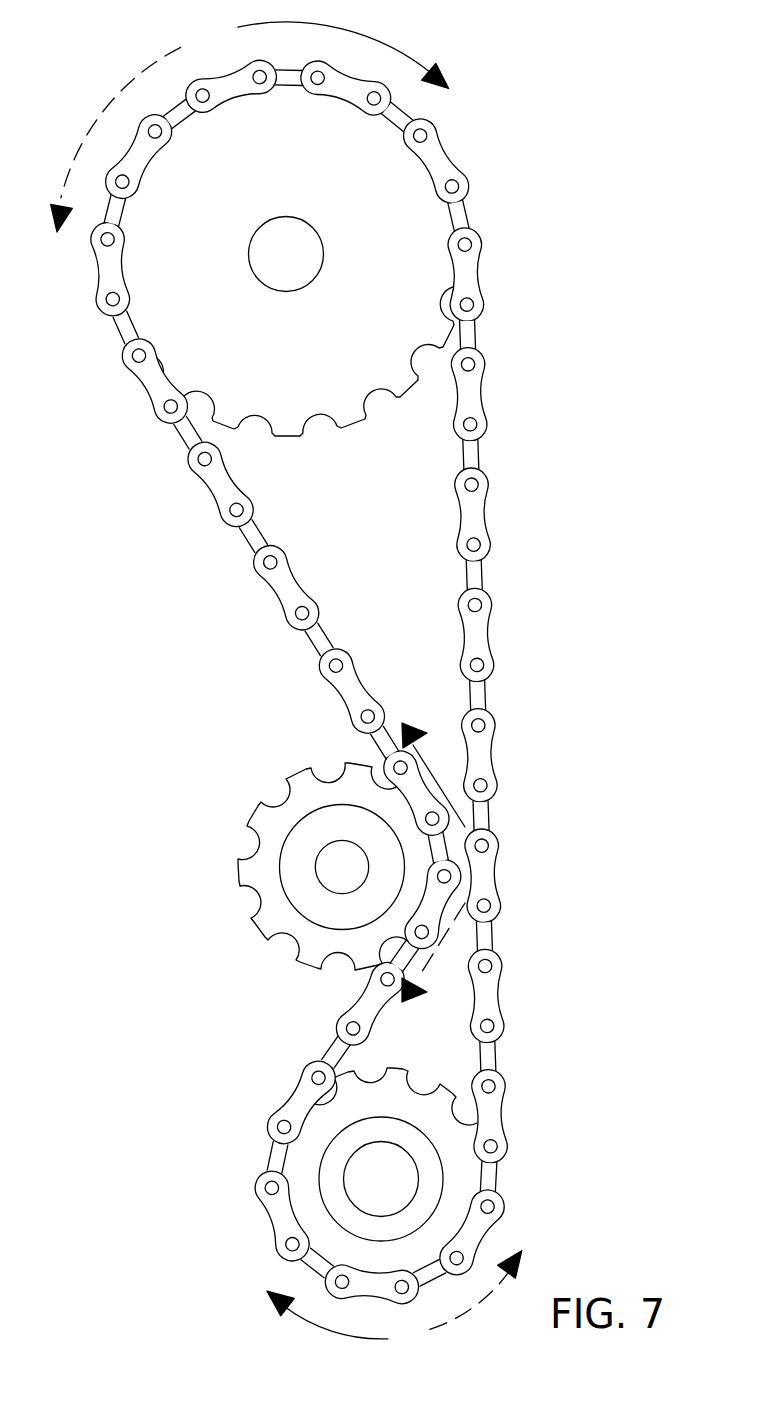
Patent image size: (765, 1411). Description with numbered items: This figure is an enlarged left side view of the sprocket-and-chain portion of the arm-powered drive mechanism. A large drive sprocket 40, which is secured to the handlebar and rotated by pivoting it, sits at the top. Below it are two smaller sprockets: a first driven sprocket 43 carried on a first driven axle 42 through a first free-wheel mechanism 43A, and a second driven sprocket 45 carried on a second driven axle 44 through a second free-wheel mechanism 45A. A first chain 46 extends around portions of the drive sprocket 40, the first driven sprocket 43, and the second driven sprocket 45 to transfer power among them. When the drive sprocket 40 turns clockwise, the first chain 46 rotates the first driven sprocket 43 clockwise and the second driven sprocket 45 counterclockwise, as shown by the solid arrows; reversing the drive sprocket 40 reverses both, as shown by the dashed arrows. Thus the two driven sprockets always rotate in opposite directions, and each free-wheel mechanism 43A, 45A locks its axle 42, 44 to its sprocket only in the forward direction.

The drive sprocket 40 is at (400, 193).
The first chain 46 is at (483, 500).
The second driven sprocket 45 is at (310, 783).
The second free-wheel mechanism 45A is at (295, 843).
The second driven axle 44 is at (333, 877).
The first driven sprocket 43 is at (445, 1093).
The first free-wheel mechanism 43A is at (433, 1177).
The first driven axle 42 is at (377, 1197).